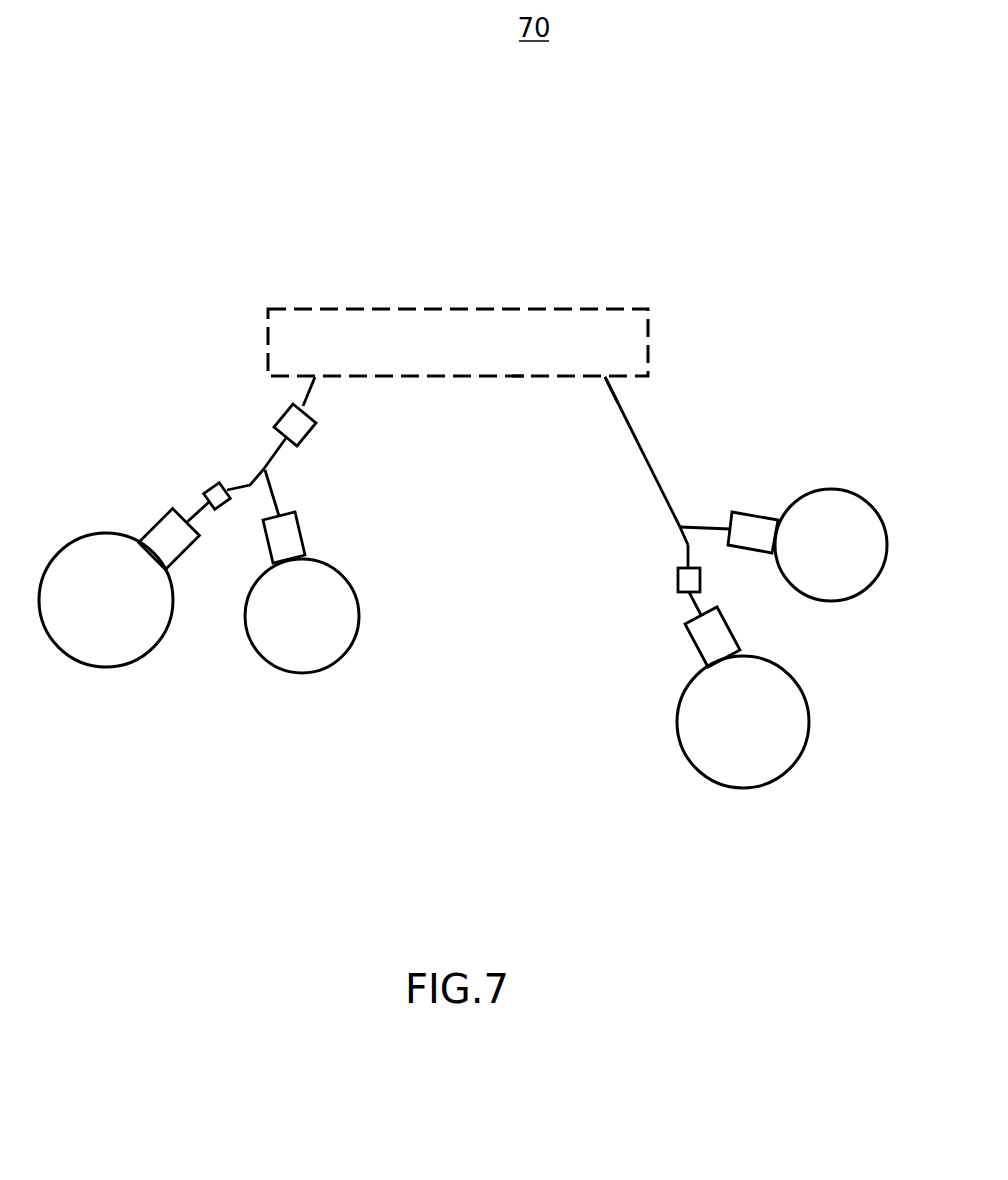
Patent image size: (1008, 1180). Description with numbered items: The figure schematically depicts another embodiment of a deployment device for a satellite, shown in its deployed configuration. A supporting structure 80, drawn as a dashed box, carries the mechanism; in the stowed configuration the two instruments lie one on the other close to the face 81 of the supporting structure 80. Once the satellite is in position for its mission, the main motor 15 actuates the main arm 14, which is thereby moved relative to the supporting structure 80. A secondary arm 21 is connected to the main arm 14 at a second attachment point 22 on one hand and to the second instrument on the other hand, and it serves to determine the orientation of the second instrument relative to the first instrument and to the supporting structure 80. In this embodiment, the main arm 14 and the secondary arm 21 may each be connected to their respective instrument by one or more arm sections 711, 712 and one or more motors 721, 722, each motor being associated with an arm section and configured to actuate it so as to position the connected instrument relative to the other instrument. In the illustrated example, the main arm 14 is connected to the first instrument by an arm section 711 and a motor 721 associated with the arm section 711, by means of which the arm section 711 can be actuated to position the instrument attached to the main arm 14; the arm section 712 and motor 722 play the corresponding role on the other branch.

The supporting structure 80 is at (503, 307).
The face 81 is at (518, 377).
The main motor 15 is at (605, 380).
The main arm 14 is at (640, 438).
The second attachment point 22 is at (677, 530).
The secondary arm 21 is at (700, 527).
The arm section 711 is at (687, 547).
The motor 721 is at (677, 612).
The arm section 712 is at (243, 483).
The motor 722 is at (202, 497).